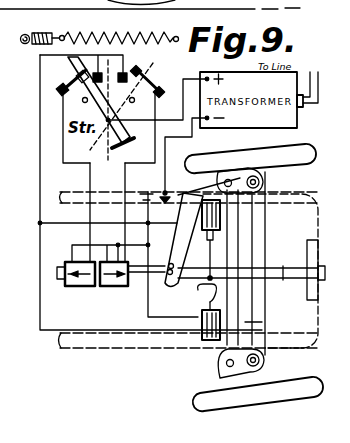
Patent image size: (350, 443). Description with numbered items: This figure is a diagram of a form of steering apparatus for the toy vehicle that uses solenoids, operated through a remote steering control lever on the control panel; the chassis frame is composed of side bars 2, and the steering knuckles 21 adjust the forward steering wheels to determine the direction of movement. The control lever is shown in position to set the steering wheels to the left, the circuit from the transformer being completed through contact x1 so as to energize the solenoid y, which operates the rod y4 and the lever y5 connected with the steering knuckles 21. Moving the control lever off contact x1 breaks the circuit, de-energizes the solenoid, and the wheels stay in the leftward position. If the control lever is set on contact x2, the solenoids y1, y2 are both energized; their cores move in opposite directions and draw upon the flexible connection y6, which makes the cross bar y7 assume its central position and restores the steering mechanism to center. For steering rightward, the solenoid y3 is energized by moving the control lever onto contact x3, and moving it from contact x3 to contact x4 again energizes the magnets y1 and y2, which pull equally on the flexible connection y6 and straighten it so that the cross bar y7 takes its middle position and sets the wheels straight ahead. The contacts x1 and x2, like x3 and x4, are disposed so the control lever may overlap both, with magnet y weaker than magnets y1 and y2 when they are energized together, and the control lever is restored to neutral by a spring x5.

The side bars 2 is at (76, 201).
The steering knuckles 21 is at (265, 177).
The contact x1 is at (65, 83).
The contact x2 is at (63, 90).
The contact x3 is at (148, 82).
The contact x4 is at (126, 73).
The spring x5 is at (43, 37).
The solenoid y is at (72, 288).
The solenoid y1 is at (222, 216).
The solenoid y2 is at (207, 342).
The solenoid y3 is at (113, 288).
The rod y4 is at (250, 297).
The lever y5 is at (180, 236).
The flexible connection y6 is at (210, 256).
The cross bar y7 is at (248, 322).